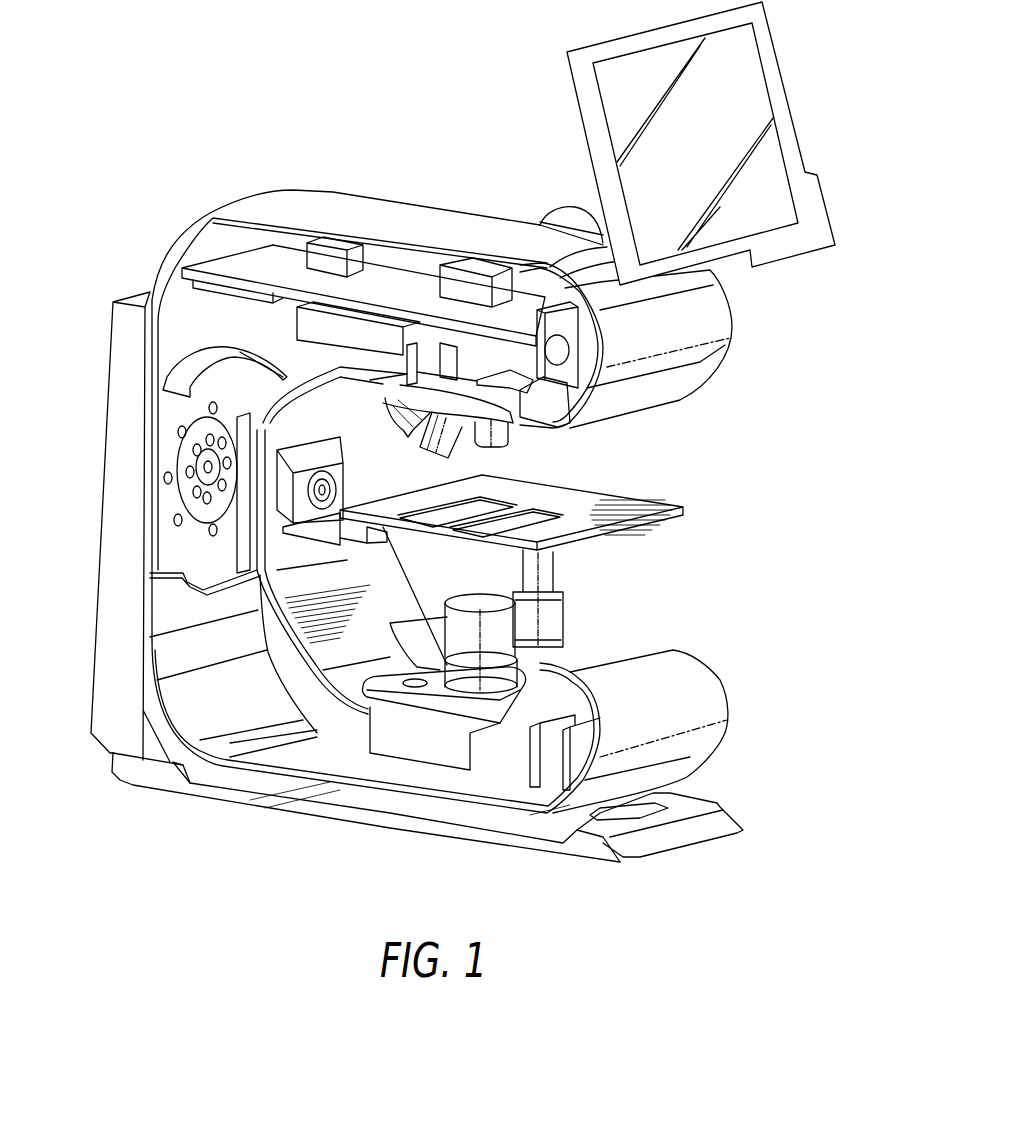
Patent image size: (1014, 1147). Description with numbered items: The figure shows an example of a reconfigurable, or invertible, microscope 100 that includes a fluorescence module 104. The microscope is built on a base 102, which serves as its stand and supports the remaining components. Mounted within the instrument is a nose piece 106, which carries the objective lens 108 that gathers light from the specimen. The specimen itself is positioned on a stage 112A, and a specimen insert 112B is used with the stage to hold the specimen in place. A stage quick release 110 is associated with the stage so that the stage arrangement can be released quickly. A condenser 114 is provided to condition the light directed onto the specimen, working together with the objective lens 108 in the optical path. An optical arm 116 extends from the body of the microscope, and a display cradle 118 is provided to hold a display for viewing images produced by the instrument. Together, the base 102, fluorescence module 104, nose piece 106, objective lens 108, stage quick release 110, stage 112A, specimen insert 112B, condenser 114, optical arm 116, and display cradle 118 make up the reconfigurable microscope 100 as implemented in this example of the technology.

The reconfigurable microscope 100 is at (148, 113).
The base 102 is at (90, 642).
The fluorescence module 104 is at (248, 262).
The nose piece 106 is at (450, 397).
The objective lens 108 is at (400, 403).
The stage quick release 110 is at (287, 492).
The stage 112A is at (538, 487).
The specimen insert 112B is at (553, 510).
The condenser 114 is at (500, 631).
The optical arm 116 is at (580, 212).
The display cradle 118 is at (770, 158).